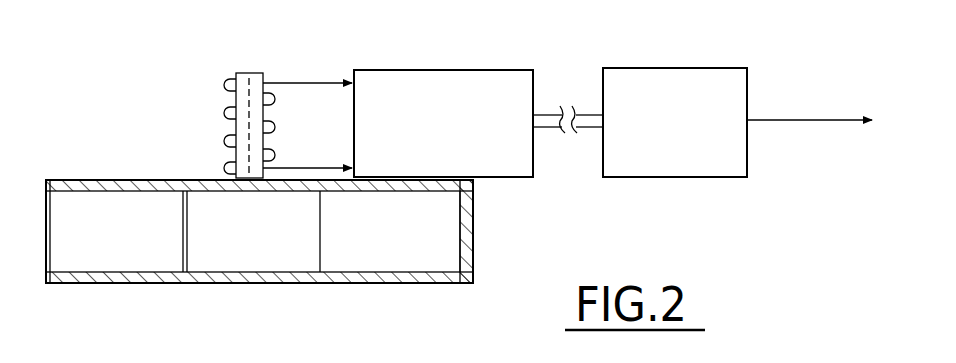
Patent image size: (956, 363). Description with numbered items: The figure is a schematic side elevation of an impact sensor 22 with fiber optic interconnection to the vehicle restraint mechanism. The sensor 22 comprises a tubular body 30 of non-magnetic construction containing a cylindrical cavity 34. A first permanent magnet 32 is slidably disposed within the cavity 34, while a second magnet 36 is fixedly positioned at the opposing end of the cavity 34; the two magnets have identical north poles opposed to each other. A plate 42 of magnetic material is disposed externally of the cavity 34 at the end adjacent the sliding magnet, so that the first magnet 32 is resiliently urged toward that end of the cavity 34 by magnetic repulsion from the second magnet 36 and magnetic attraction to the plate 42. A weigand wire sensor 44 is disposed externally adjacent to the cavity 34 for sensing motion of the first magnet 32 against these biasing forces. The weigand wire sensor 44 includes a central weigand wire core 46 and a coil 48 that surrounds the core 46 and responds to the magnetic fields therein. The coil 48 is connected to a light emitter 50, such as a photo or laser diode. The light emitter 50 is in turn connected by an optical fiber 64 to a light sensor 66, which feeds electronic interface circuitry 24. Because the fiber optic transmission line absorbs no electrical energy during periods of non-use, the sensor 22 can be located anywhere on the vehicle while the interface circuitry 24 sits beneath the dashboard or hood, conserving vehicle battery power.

The sensor 22 is at (110, 112).
The electronic interface circuitry 24 is at (809, 104).
The tubular body 30 is at (122, 179).
The first permanent magnet 32 is at (395, 255).
The cylindrical cavity 34 is at (257, 253).
The second magnet 36 is at (127, 258).
The plate 42 is at (475, 242).
The weigand wire sensor 44 is at (200, 67).
The weigand wire core 46 is at (263, 75).
The coil 48 is at (230, 143).
The light emitter 50 is at (455, 70).
The optical fiber 64 is at (545, 110).
The light sensor 66 is at (683, 67).